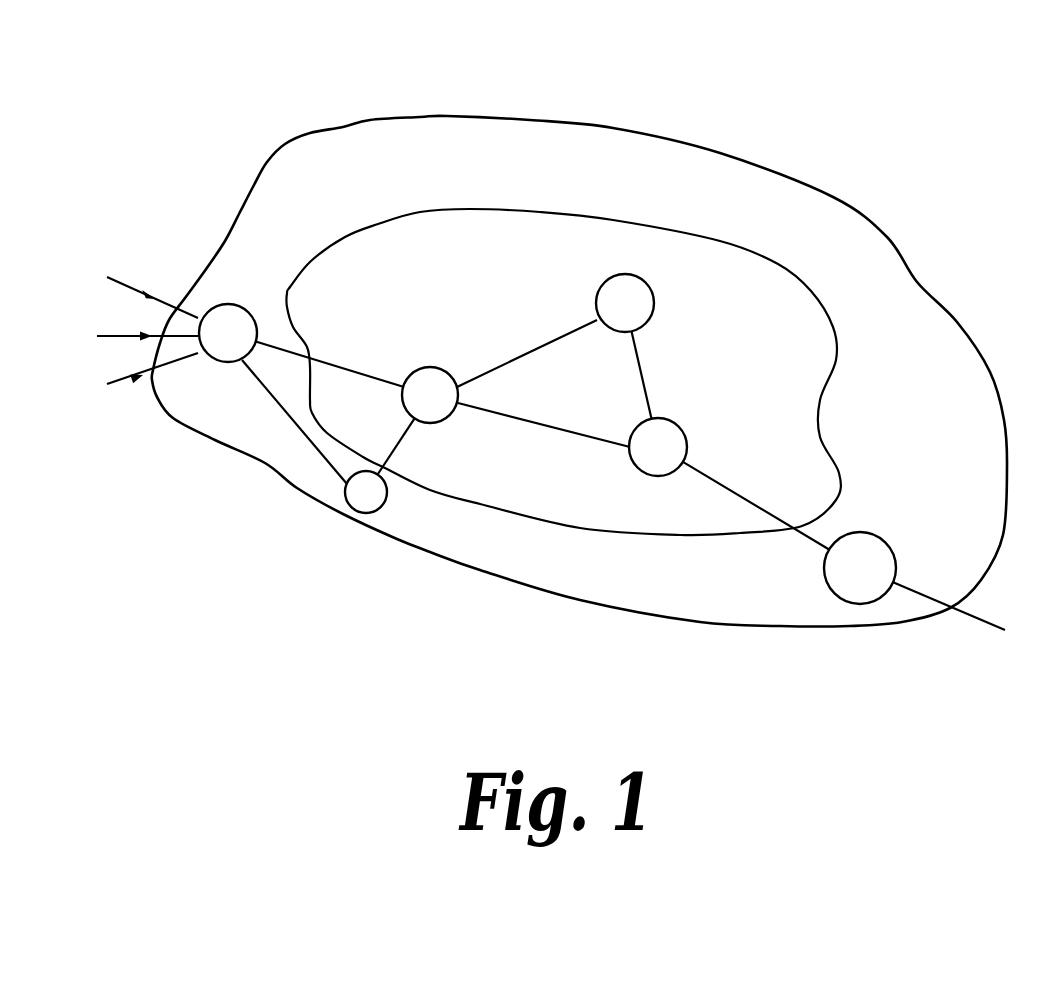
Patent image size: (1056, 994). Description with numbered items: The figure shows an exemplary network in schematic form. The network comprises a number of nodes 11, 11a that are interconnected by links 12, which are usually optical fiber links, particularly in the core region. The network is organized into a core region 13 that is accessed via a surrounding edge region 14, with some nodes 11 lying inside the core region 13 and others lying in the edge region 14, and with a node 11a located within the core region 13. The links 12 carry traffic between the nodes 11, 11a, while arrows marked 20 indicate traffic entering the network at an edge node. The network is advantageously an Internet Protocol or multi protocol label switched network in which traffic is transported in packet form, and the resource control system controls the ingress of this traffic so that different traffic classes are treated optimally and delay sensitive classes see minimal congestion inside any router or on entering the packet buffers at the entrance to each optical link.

The node 11 is at (847, 594).
The node 11a is at (641, 473).
The link 12 is at (317, 458).
The core region 13 is at (780, 261).
The edge region 14 is at (625, 128).
The input signals 20 is at (124, 280).